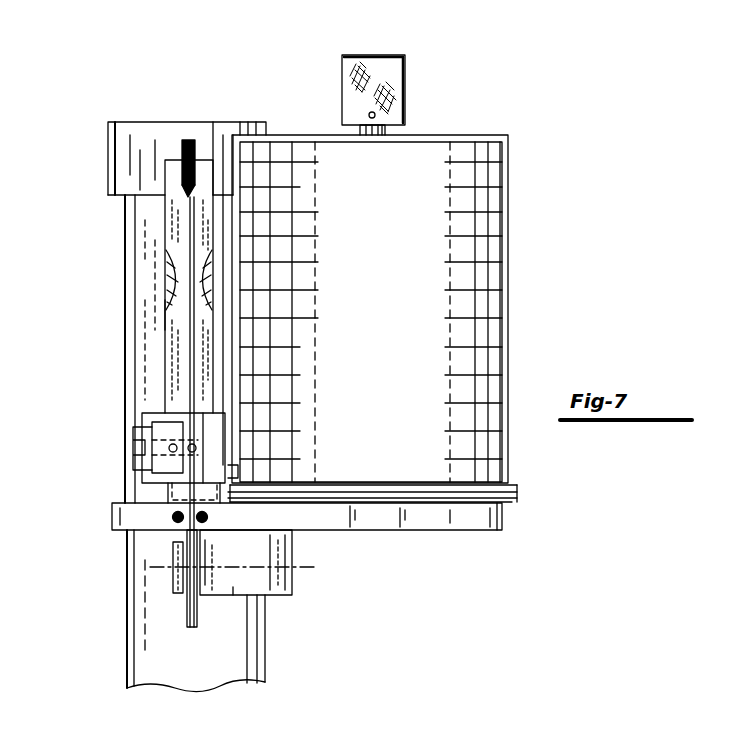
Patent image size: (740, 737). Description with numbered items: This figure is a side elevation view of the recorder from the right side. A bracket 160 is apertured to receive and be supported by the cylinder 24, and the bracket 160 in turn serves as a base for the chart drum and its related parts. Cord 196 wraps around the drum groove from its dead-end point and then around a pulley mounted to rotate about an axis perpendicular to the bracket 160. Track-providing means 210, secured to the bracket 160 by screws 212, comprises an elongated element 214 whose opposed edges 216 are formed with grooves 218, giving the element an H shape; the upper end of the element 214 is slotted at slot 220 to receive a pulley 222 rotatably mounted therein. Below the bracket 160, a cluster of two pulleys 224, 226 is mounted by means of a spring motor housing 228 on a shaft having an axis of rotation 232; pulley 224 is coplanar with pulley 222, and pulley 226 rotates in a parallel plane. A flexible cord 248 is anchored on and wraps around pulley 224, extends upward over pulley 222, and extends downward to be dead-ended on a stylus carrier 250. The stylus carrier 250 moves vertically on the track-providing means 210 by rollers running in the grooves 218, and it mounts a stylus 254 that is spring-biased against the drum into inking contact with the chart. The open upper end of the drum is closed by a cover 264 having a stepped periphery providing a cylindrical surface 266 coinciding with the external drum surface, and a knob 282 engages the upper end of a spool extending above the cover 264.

The cylinder 24 is at (127, 672).
The bracket 160 is at (475, 522).
The cord 196 is at (437, 463).
The track-providing means 210 is at (172, 244).
The screws 212 is at (202, 520).
The element 214 is at (182, 215).
The opposed edges 216 is at (163, 313).
The grooves 218 is at (173, 273).
The slot 220 is at (182, 188).
The pulley 222 is at (172, 149).
The pulley 224 is at (185, 610).
The pulley 226 is at (175, 575).
The spring motor housing 228 is at (233, 587).
The axis of rotation 232 is at (300, 568).
The flexible cord 248 is at (187, 343).
The stylus carrier 250 is at (212, 437).
The stylus 254 is at (237, 478).
The cover 264 is at (308, 137).
The cylindrical surface 266 is at (387, 138).
The knob 282 is at (388, 54).